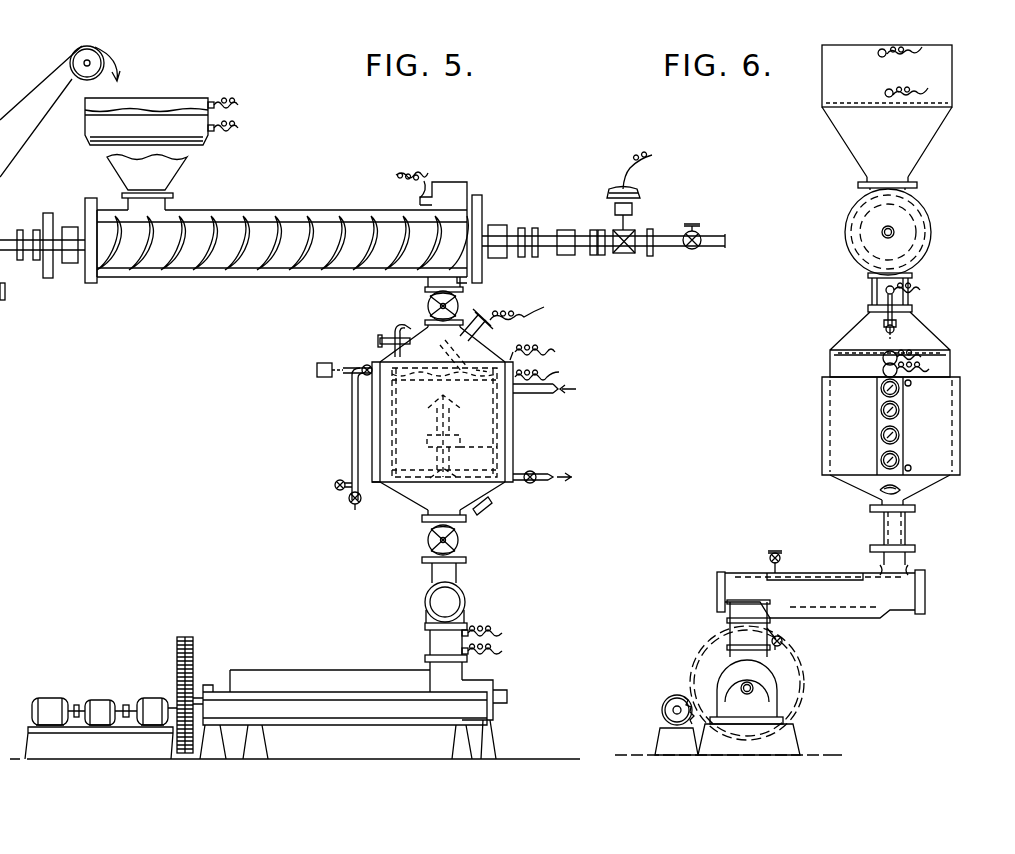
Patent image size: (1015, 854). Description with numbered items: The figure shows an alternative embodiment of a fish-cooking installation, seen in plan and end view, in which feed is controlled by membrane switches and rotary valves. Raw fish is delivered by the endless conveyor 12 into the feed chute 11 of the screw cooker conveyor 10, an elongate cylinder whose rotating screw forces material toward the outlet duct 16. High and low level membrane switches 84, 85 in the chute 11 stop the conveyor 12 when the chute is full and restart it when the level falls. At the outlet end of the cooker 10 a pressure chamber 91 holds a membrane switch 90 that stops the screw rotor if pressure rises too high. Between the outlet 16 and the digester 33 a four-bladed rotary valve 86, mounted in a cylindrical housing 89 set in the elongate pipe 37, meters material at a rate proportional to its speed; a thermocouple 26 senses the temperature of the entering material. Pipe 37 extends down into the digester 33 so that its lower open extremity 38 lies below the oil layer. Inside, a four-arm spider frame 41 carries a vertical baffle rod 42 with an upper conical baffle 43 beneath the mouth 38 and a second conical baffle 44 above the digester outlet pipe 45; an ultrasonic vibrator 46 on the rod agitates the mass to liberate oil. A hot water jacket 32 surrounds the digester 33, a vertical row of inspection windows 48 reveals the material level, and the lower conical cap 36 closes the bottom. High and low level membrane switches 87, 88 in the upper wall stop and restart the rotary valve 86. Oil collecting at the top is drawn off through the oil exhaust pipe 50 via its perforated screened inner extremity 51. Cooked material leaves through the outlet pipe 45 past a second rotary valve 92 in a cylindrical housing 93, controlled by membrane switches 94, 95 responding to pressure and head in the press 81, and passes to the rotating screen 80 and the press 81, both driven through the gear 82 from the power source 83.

In FIG. 5, the screw cooker conveyor 10 is at (295, 210).
In FIG. 6, the screw cooker conveyor 10 is at (920, 203).
In FIG. 5, the feed chute 11 is at (150, 100).
In FIG. 5, the endless conveyor 12 is at (25, 150).
In FIG. 5, the outlet duct 16 is at (425, 282).
In FIG. 5, the thermocouple 26 is at (488, 330).
In FIG. 6, the thermocouple 26 is at (905, 318).
In FIG. 6, the hot water jacket 32 is at (960, 398).
In FIG. 5, the digester 33 is at (500, 415).
In FIG. 6, the digester 33 is at (945, 368).
In FIG. 5, the lower conical cap 36 is at (410, 498).
In FIG. 6, the lower conical cap 36 is at (848, 485).
In FIG. 5, the elongate pipe 37 is at (476, 350).
In FIG. 5, the lower open extremity 38 is at (472, 378).
In FIG. 5, the spider frame 41 is at (486, 440).
In FIG. 5, the baffle rod 42 is at (437, 419).
In FIG. 5, the conical baffle 43 is at (436, 402).
In FIG. 5, the second conical baffle 44 is at (433, 470).
In FIG. 5, the digester outlet pipe 45 is at (464, 514).
In FIG. 6, the digester outlet pipe 45 is at (915, 507).
In FIG. 5, the ultrasonic vibrator 46 is at (455, 440).
In FIG. 6, the inspection windows 48 is at (900, 412).
In FIG. 5, the oil exhaust pipe 50 is at (351, 409).
In FIG. 5, the perforated screened inner extremity 51 is at (370, 366).
In FIG. 5, the rotating screen 80 is at (352, 672).
In FIG. 6, the rotating screen 80 is at (775, 670).
In FIG. 5, the press 81 is at (336, 708).
In FIG. 6, the press 81 is at (672, 718).
In FIG. 5, the gear 82 is at (177, 640).
In FIG. 6, the gear 82 is at (705, 648).
In FIG. 5, the power source 83 is at (52, 700).
In FIG. 6, the power source 83 is at (663, 700).
In FIG. 5, the high level membrane switch 84 is at (216, 103).
In FIG. 6, the high level membrane switch 84 is at (882, 60).
In FIG. 5, the low level membrane switch 85 is at (216, 128).
In FIG. 6, the low level membrane switch 85 is at (885, 93).
In FIG. 5, the rotary valve 86 is at (458, 300).
In FIG. 6, the rotary valve 86 is at (872, 293).
In FIG. 5, the high level membrane switch 87 is at (530, 352).
In FIG. 6, the high level membrane switch 87 is at (882, 353).
In FIG. 5, the low level membrane switch 88 is at (560, 374).
In FIG. 6, the low level membrane switch 88 is at (882, 368).
In FIG. 5, the cylindrical housing 89 is at (428, 304).
In FIG. 5, the membrane switch 90 is at (412, 176).
In FIG. 5, the pressure chamber 91 is at (447, 182).
In FIG. 5, the rotary valve 92 is at (460, 540).
In FIG. 6, the rotary valve 92 is at (912, 522).
In FIG. 5, the cylindrical housing 93 is at (428, 541).
In FIG. 6, the cylindrical housing 93 is at (884, 524).
In FIG. 5, the membrane switch 94 is at (468, 632).
In FIG. 5, the membrane switch 95 is at (470, 648).